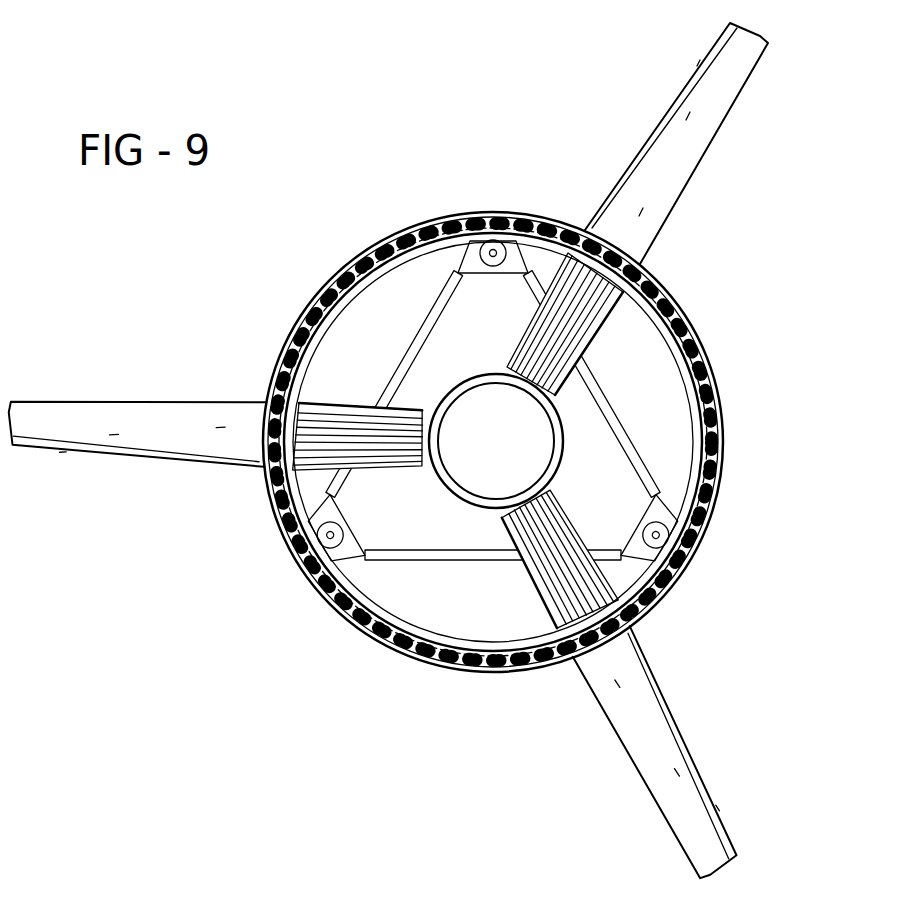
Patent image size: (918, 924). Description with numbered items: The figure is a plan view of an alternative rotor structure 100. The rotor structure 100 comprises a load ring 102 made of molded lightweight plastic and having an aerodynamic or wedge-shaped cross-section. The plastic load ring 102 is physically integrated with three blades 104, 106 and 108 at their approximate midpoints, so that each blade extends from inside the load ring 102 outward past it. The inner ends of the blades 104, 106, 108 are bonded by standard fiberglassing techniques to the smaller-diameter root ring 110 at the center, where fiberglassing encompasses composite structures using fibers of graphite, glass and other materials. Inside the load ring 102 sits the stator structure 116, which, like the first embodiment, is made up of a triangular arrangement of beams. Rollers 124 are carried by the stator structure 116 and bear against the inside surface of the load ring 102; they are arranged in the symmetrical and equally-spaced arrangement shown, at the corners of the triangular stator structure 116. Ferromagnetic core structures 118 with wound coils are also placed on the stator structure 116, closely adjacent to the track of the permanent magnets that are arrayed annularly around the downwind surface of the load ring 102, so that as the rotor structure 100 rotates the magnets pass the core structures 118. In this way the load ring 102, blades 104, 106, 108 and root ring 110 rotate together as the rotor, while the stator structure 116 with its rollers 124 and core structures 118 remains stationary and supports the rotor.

The rotor structure 100 is at (317, 266).
The load ring 102 is at (712, 336).
The blade 104 is at (108, 406).
The blade 106 is at (630, 148).
The blade 108 is at (678, 712).
The root ring 110 is at (480, 500).
The stator structure 116 is at (626, 432).
The ferromagnetic core structure 118 is at (712, 514).
The roller 124 is at (490, 270).